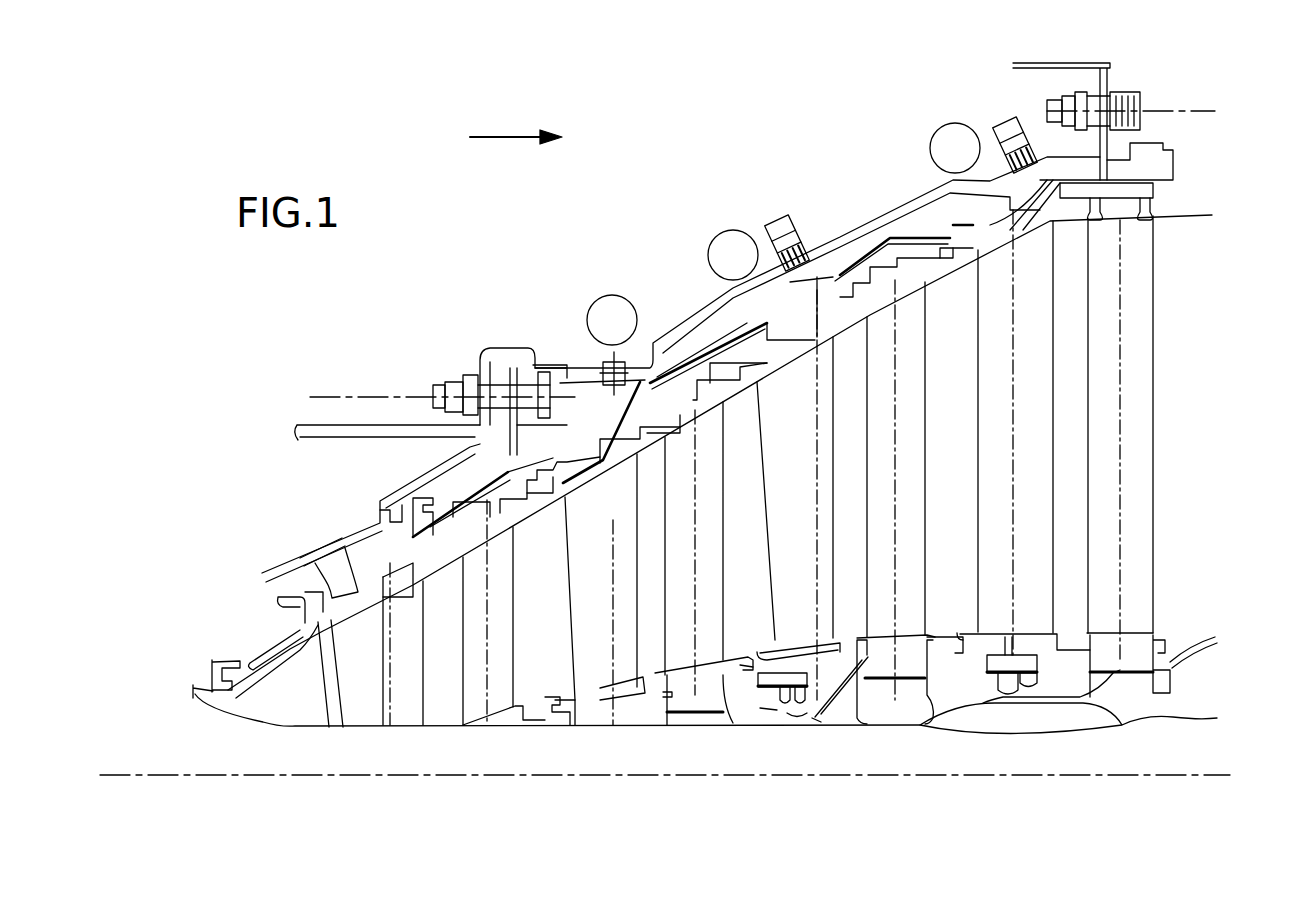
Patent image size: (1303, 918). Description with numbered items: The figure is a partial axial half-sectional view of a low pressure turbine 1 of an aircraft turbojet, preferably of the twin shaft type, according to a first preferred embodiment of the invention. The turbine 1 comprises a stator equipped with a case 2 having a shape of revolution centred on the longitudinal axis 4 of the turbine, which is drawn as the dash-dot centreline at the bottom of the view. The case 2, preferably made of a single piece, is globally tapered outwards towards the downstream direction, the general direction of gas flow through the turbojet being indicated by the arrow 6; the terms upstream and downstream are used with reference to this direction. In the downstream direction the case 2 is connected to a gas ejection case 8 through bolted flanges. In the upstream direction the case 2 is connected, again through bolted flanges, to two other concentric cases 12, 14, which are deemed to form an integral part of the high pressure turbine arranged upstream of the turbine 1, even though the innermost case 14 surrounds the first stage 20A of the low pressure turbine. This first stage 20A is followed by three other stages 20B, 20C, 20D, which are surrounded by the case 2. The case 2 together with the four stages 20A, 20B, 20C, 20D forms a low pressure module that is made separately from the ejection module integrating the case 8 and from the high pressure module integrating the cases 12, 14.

The low pressure turbine 1 is at (727, 138).
The case 2 is at (857, 225).
The longitudinal axis 4 is at (160, 774).
The arrow 6 is at (500, 135).
The gas ejection case 8 is at (1163, 138).
The case 12 is at (352, 430).
The innermost case 14 is at (287, 572).
The first stage 20A is at (393, 745).
The second stage 20B is at (647, 745).
The third stage 20C is at (883, 745).
The fourth stage 20D is at (1097, 742).